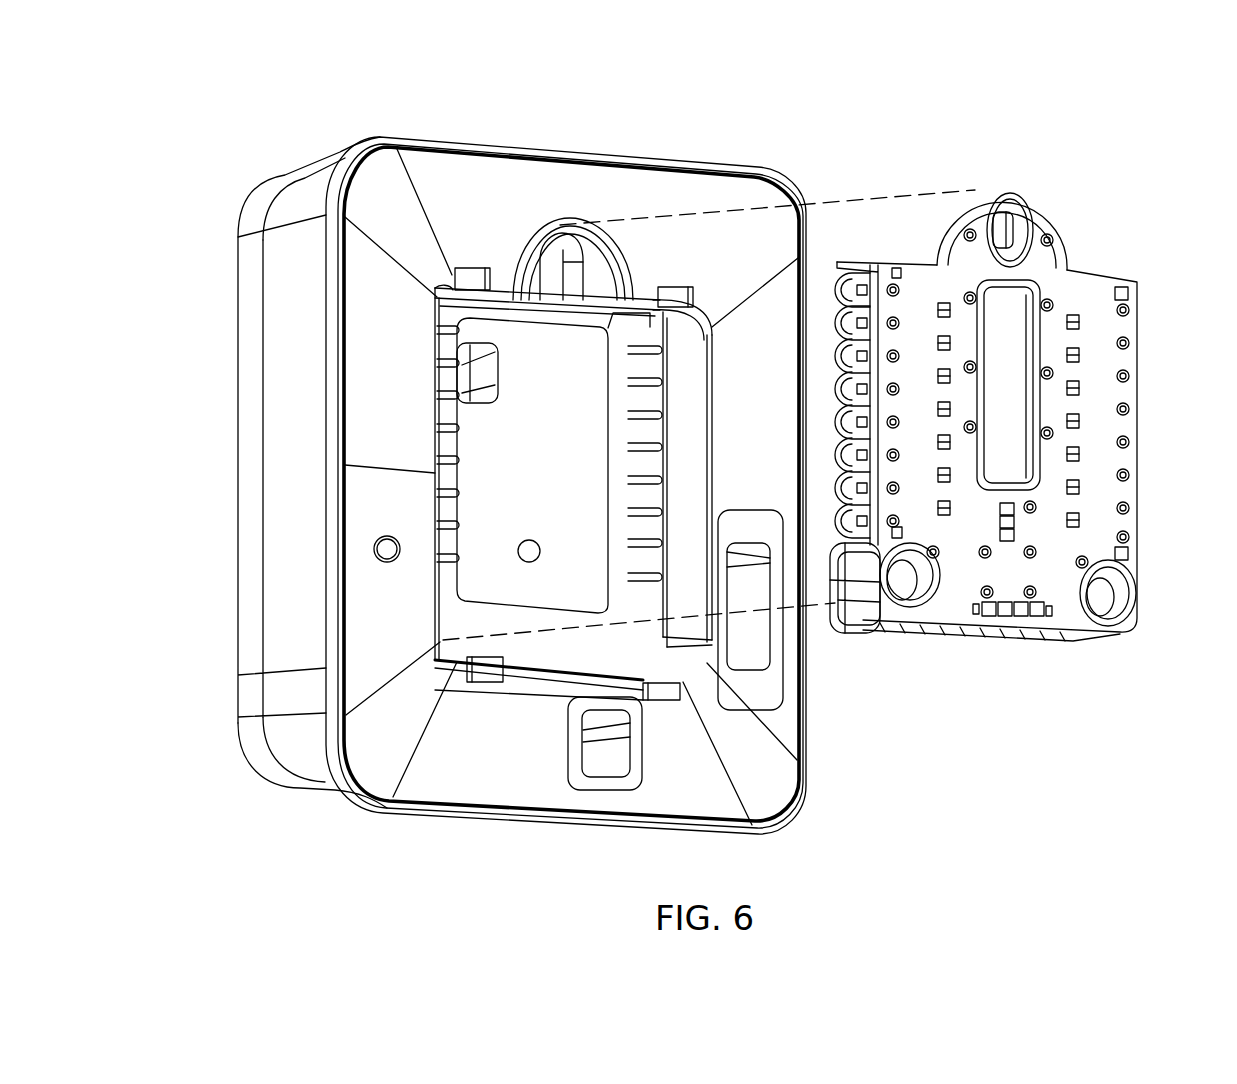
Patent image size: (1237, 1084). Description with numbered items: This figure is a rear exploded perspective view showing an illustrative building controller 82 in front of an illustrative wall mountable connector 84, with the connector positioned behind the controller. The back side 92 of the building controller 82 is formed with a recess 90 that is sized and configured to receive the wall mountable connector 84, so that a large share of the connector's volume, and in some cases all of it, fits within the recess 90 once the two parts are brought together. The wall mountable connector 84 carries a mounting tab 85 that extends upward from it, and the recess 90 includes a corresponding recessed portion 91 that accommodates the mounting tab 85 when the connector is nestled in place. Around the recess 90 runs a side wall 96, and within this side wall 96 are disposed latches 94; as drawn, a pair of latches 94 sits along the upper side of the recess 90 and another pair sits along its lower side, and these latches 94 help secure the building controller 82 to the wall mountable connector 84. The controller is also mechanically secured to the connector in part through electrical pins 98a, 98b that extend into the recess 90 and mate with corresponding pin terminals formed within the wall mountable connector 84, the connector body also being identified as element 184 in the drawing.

The building controller 82 is at (307, 181).
The wall mountable connector 84 is at (1097, 274).
The mounting tab 85 is at (1018, 194).
The recess 90 is at (680, 296).
The recessed portion 91 is at (571, 368).
The back side 92 is at (527, 209).
The latches 94 is at (472, 270).
The side wall 96 is at (530, 652).
The first pin header 98a is at (648, 602).
The second pin header 98b is at (432, 580).
The circuit board 184 is at (1117, 524).